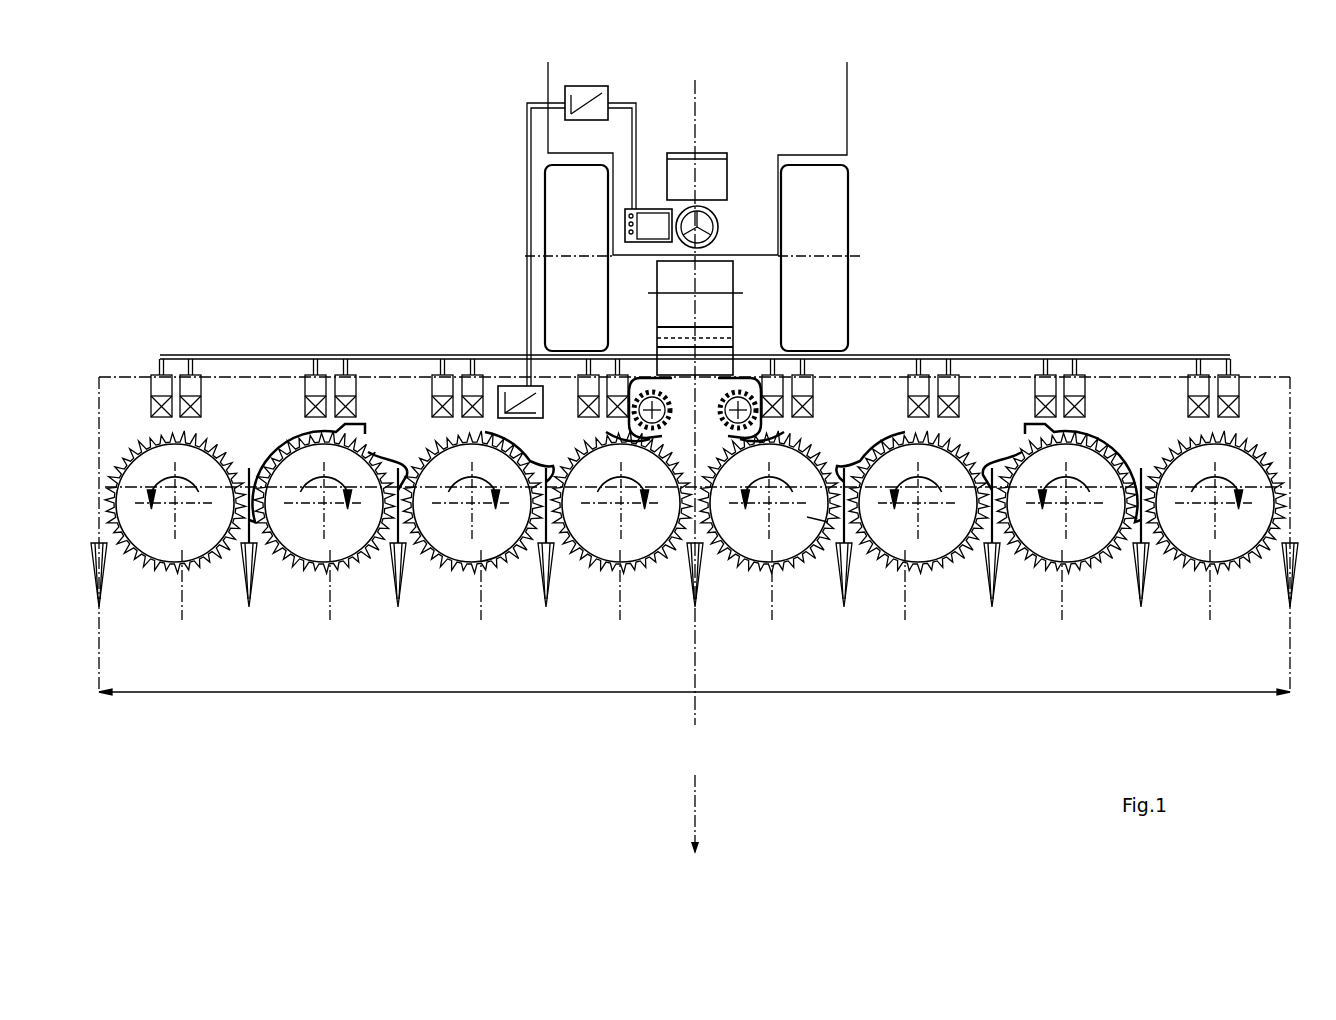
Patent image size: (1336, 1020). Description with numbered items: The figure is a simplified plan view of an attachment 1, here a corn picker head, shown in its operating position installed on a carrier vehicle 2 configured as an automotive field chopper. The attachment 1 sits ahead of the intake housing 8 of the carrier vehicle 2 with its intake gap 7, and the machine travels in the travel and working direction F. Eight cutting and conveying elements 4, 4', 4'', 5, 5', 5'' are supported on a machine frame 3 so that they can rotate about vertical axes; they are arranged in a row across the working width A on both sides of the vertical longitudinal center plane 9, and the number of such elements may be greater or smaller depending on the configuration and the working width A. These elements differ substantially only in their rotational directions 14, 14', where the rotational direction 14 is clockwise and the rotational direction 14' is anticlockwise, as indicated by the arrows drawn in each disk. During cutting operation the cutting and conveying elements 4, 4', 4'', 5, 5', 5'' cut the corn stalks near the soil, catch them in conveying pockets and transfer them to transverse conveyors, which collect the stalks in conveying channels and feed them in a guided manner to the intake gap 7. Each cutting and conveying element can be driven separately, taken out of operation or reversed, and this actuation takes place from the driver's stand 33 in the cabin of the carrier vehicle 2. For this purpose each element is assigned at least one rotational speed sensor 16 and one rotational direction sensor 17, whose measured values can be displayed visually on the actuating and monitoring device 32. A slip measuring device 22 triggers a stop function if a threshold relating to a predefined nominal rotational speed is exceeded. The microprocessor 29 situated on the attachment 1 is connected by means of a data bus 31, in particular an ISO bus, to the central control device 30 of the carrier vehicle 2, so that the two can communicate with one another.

The attachment 1 is at (1109, 205).
The carrier vehicle 2 is at (825, 228).
The machine frame 3 is at (1119, 379).
The cutting and conveying element 4 is at (771, 522).
The cutting and conveying element 4' is at (547, 518).
The cutting and conveying element 4'' is at (1066, 522).
The cutting and conveying element 5 is at (621, 535).
The cutting and conveying element 5' is at (844, 522).
The cutting and conveying element 5'' is at (324, 518).
The intake gap 7 is at (695, 408).
The intake housing 8 is at (713, 277).
The vertical longitudinal center plane 9 is at (700, 113).
The rotational direction in the clockwise direction 14 is at (313, 448).
The rotational direction in the anticlockwise direction 14' is at (157, 448).
The rotational speed sensor 16 is at (158, 380).
The rotational direction sensor 17 is at (195, 380).
The slip measuring device 22 is at (512, 392).
The microprocessor 29 is at (505, 370).
The central control device of the carrier vehicle 30 is at (588, 93).
The data bus 31 is at (526, 205).
The actuating and monitoring device 32 is at (648, 231).
The driver's stand 33 is at (742, 165).
The working width A is at (694, 724).
The travel and working direction F is at (698, 835).